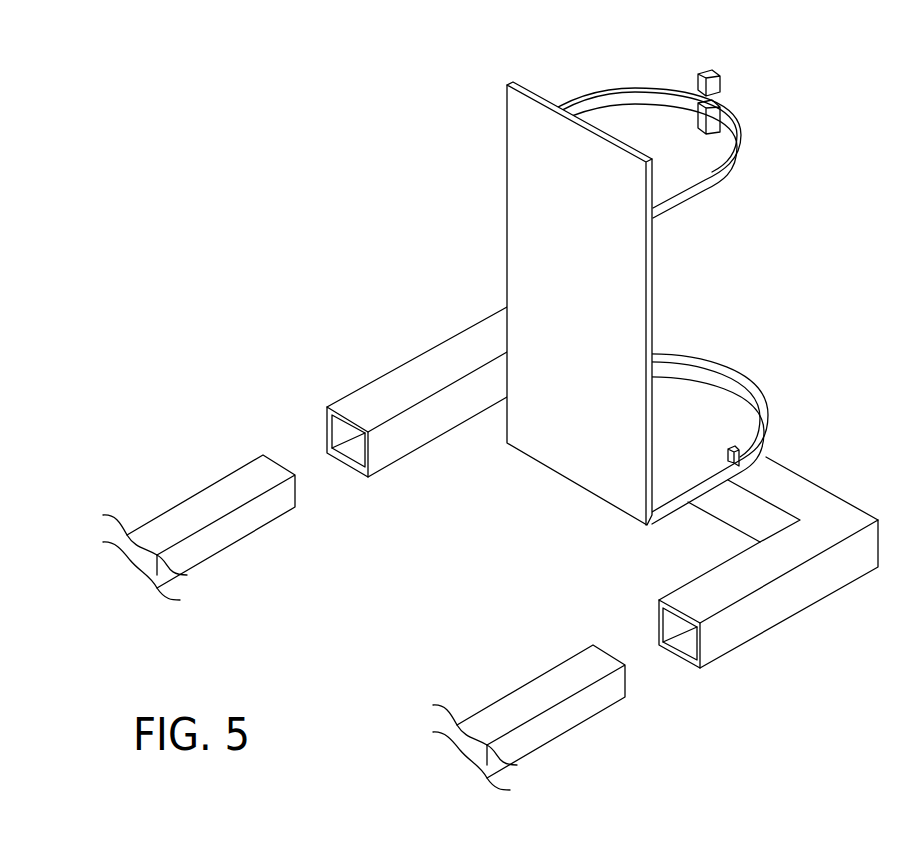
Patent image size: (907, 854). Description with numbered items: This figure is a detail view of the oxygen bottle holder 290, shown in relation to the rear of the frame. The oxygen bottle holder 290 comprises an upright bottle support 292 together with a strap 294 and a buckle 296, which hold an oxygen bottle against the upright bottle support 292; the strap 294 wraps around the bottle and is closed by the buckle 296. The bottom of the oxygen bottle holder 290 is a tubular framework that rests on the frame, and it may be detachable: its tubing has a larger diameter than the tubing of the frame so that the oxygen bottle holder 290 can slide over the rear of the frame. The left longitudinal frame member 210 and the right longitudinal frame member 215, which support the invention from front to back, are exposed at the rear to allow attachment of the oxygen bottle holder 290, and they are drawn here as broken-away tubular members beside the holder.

The oxygen bottle holder 290 is at (507, 47).
The upright bottle support 292 is at (623, 372).
The strap 294 is at (622, 96).
The buckle 296 is at (720, 116).
The right longitudinal frame member 215 is at (211, 505).
The left longitudinal frame member 210 is at (547, 733).